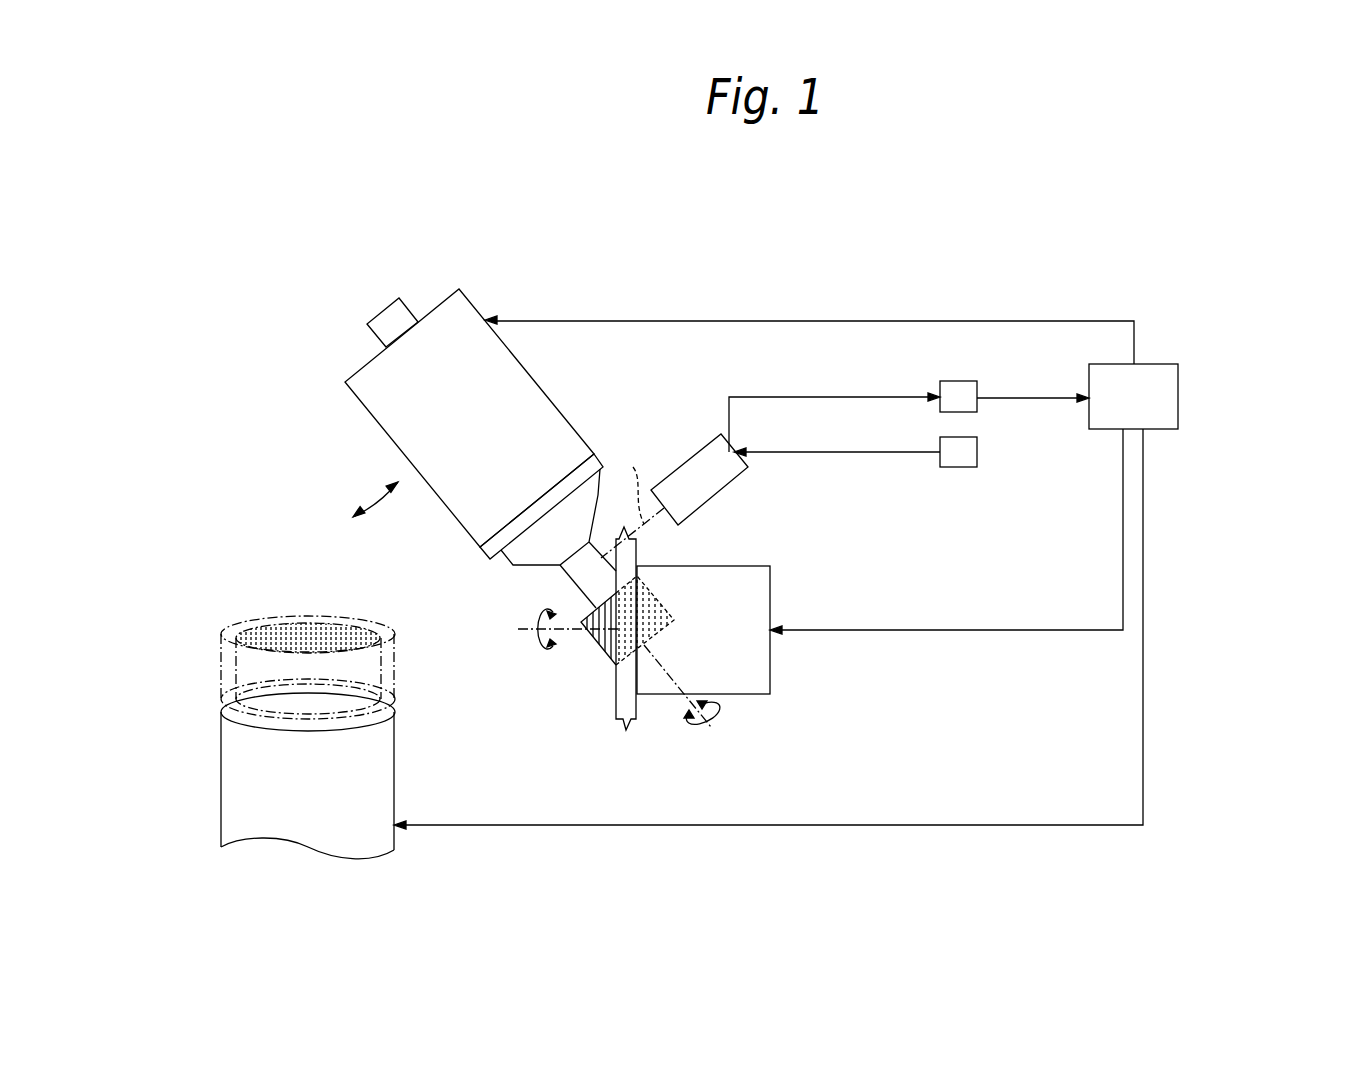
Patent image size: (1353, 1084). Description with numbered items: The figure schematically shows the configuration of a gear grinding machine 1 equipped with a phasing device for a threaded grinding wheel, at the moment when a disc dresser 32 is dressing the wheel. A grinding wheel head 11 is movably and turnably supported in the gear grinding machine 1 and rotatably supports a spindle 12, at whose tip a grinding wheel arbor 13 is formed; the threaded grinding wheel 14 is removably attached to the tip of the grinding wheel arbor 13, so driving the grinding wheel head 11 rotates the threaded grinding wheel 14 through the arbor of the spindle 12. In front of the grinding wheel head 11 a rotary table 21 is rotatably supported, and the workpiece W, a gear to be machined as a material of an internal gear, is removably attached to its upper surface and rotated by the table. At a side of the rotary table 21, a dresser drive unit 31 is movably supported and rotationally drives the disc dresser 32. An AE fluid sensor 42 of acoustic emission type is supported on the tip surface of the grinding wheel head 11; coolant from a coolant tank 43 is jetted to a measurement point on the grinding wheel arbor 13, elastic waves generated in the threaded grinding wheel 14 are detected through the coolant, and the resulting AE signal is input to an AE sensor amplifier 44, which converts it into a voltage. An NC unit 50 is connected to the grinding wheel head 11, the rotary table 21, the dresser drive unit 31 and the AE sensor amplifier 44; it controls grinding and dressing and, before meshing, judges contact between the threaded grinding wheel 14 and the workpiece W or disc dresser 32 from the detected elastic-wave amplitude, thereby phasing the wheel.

The gear grinding machine 1 is at (797, 279).
The grinding wheel head 11 is at (367, 413).
The spindle 12 is at (503, 557).
The grinding wheel arbor 13 is at (570, 576).
The threaded grinding wheel 14 is at (592, 636).
The rotary table 21 is at (220, 768).
The workpiece W is at (220, 666).
The dresser drive unit 31 is at (747, 693).
The disc dresser 32 is at (635, 718).
The AE fluid sensor 42 is at (692, 455).
The coolant tank 43 is at (967, 465).
The AE sensor amplifier 44 is at (977, 380).
The NC unit 50 is at (1177, 395).